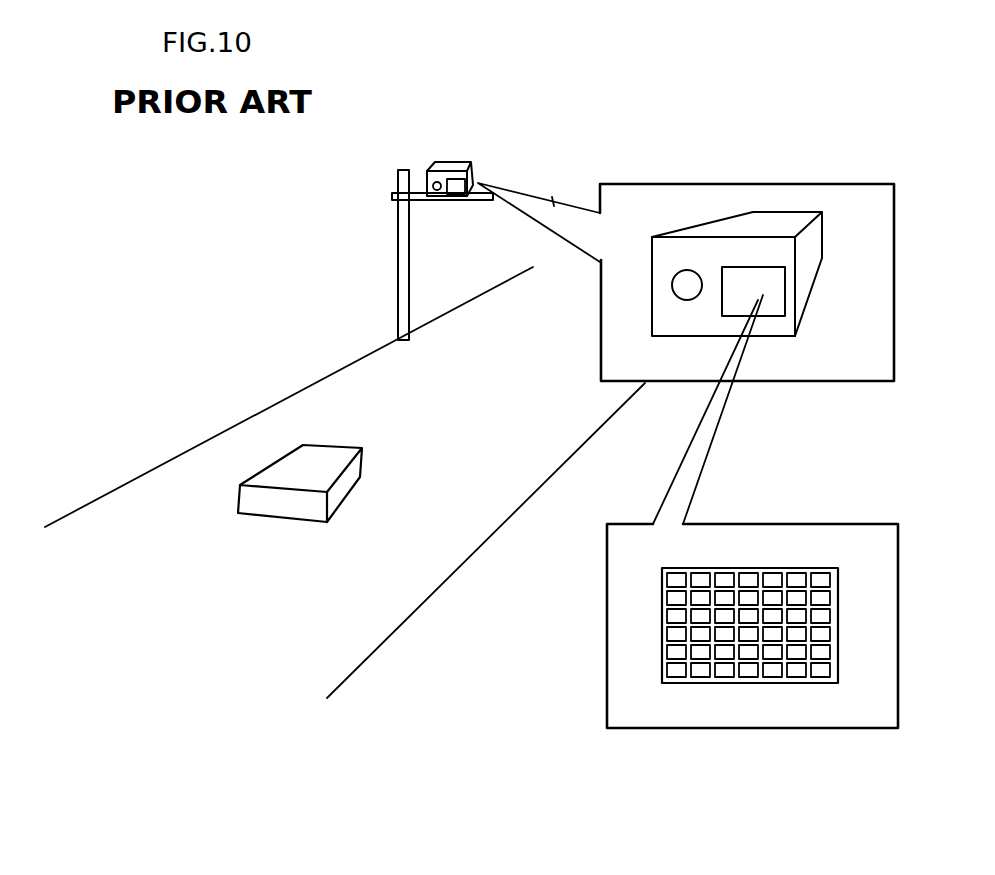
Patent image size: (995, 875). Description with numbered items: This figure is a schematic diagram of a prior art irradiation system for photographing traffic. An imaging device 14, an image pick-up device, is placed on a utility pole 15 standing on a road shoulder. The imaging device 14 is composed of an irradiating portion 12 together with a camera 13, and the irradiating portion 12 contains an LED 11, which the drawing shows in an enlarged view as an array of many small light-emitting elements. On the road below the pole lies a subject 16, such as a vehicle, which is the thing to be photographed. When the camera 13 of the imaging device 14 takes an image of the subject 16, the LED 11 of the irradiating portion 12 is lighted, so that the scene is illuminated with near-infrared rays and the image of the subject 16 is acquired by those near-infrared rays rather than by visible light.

The LED 11 is at (715, 580).
The irradiating portion 12 is at (753, 267).
The camera 13 is at (677, 270).
The imaging device 14 is at (808, 262).
The utility pole 15 is at (406, 232).
The subject 16 is at (323, 447).